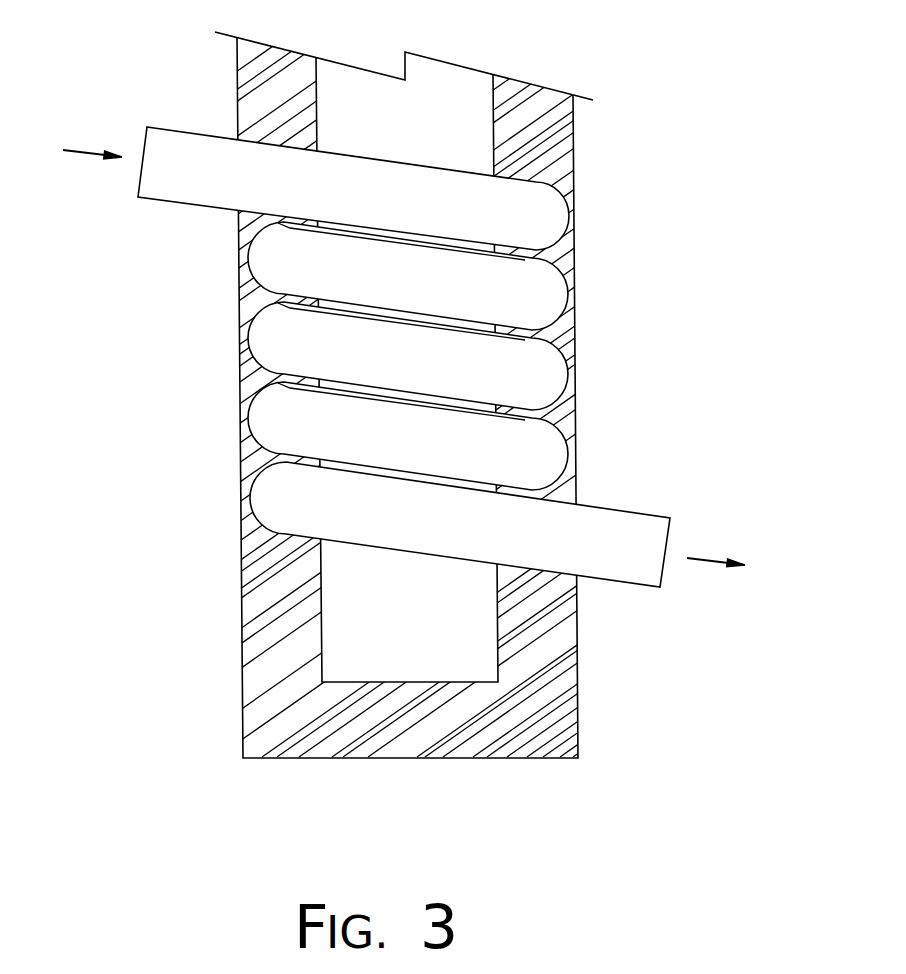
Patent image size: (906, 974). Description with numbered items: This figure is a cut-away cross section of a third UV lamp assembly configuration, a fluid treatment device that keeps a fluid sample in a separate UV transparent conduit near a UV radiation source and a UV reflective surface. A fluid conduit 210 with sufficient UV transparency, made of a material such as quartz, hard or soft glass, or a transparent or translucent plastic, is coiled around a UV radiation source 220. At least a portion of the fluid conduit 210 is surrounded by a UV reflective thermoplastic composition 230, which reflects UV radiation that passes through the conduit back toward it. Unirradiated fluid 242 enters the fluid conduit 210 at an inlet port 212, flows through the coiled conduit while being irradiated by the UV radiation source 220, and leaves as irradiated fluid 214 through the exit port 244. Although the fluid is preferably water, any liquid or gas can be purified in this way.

The fluid conduit 210 is at (560, 211).
The inlet port 212 is at (197, 210).
The irradiated fluid 214 is at (618, 515).
The UV radiation source 220 is at (398, 590).
The UV reflective thermoplastic composition 230 is at (403, 745).
The unirradiated fluid 242 is at (93, 150).
The exit port 244 is at (717, 557).